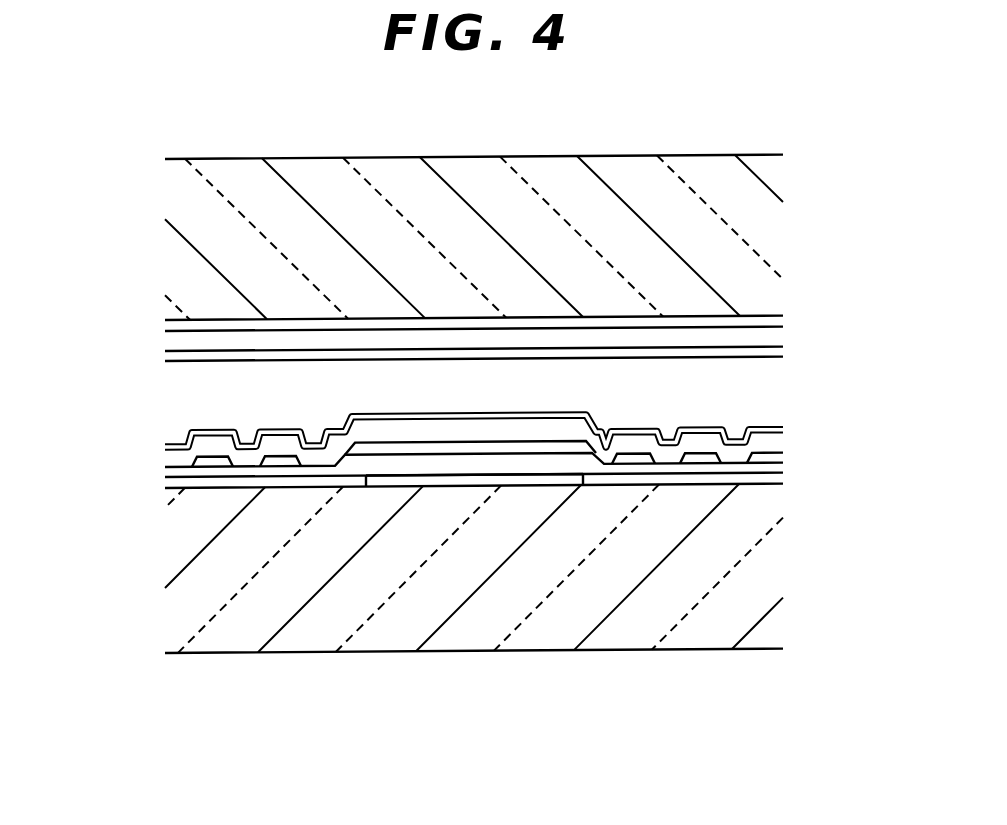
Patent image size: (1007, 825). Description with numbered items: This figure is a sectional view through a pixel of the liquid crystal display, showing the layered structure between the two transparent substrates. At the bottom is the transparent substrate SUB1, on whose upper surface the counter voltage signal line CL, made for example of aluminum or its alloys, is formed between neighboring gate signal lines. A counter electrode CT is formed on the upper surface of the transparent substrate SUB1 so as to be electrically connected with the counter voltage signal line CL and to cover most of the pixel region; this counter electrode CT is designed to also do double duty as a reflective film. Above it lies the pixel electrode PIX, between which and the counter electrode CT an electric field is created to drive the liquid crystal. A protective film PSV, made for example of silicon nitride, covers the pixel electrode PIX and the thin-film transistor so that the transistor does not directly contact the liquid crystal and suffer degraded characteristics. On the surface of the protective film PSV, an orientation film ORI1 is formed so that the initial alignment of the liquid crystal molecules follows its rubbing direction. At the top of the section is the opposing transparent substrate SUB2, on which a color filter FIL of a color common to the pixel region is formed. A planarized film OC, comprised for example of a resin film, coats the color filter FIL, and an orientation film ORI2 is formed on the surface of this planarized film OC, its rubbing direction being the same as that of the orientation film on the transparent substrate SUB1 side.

The transparent substrate SUB2 is at (755, 226).
The color filter FIL is at (783, 323).
The planarized film OC is at (773, 333).
The orientation film ORI2 is at (163, 360).
The orientation film ORI1 is at (177, 447).
The protective film PSV is at (173, 463).
The pixel electrode PIX is at (773, 458).
The counter electrode CT is at (773, 478).
The counter voltage signal line CL is at (398, 483).
The transparent substrate SUB1 is at (768, 573).